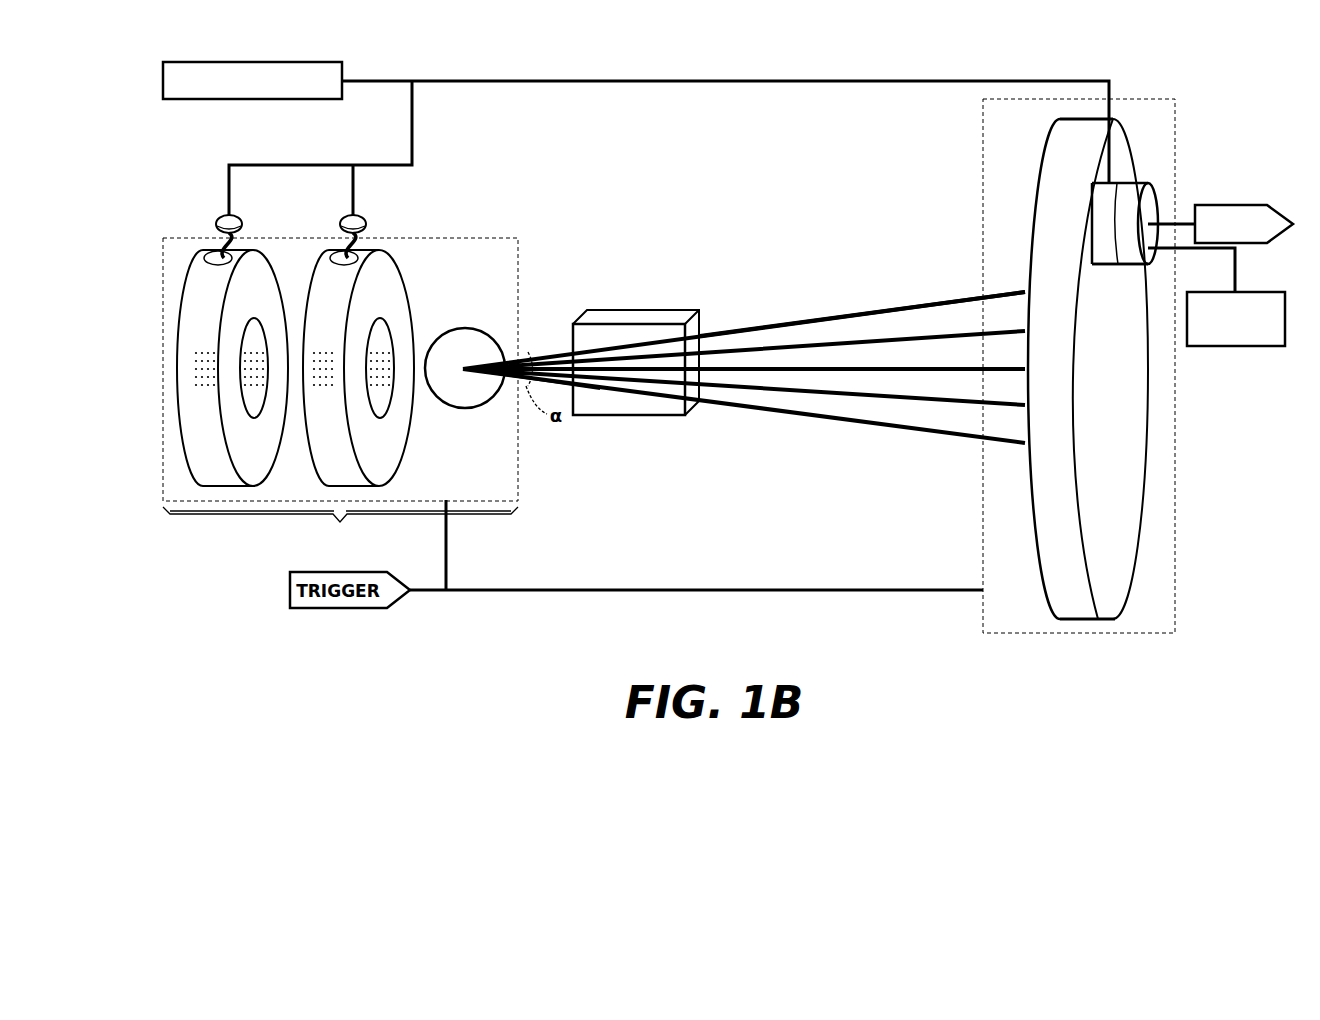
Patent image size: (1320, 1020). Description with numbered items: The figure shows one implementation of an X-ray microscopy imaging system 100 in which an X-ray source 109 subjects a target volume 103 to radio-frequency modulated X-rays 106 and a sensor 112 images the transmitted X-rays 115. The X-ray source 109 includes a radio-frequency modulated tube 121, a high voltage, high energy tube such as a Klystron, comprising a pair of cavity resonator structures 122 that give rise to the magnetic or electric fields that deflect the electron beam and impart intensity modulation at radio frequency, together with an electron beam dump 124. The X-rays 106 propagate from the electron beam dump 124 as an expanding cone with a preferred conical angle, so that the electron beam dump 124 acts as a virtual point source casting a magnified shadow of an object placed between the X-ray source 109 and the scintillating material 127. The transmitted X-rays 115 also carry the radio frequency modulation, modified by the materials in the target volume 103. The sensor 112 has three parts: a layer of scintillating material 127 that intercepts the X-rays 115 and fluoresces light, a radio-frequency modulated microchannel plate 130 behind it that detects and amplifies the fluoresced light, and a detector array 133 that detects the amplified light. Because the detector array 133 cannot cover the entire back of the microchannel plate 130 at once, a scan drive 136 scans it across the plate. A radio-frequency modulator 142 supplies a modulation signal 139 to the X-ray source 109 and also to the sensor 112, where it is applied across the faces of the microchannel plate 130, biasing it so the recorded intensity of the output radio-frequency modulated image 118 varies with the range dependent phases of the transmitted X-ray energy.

The X-ray microscopy imaging system 100 is at (150, 195).
The radio-frequency modulator 142 is at (298, 62).
The modulation signal 139 is at (378, 80).
The X-ray source 109 is at (518, 238).
The cavity resonator structures 122 is at (410, 299).
The radio-frequency modulated tube 121 is at (340, 529).
The electron beam dump 124 is at (466, 416).
The X-rays 106 is at (530, 358).
The X-rays emanating from the target volume 115 is at (836, 313).
The target volume 103 is at (641, 310).
The sensor 112 is at (1176, 99).
The scintillating material 127 is at (1068, 118).
The detector array 133 is at (1156, 190).
The radio-frequency modulated microchannel plate 130 is at (1105, 266).
The radio-frequency modulated image 118 is at (1250, 205).
The scan drive 136 is at (1285, 292).